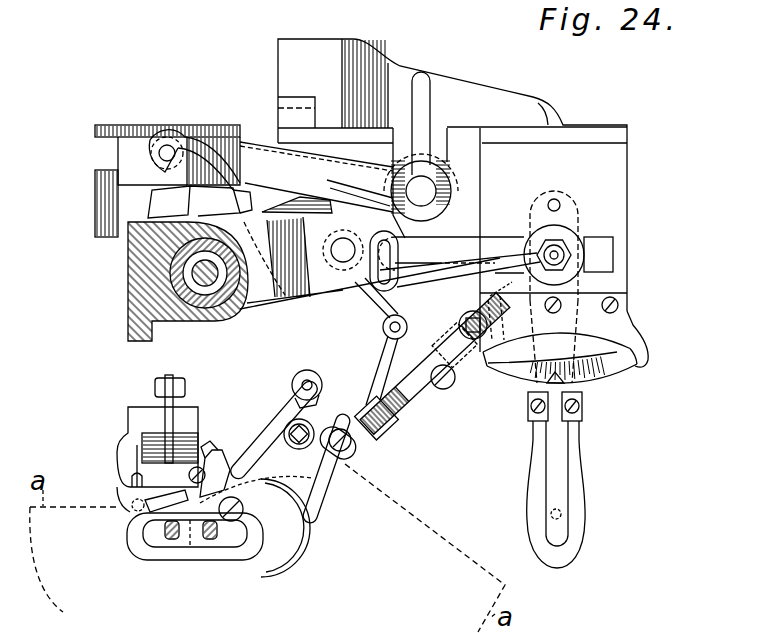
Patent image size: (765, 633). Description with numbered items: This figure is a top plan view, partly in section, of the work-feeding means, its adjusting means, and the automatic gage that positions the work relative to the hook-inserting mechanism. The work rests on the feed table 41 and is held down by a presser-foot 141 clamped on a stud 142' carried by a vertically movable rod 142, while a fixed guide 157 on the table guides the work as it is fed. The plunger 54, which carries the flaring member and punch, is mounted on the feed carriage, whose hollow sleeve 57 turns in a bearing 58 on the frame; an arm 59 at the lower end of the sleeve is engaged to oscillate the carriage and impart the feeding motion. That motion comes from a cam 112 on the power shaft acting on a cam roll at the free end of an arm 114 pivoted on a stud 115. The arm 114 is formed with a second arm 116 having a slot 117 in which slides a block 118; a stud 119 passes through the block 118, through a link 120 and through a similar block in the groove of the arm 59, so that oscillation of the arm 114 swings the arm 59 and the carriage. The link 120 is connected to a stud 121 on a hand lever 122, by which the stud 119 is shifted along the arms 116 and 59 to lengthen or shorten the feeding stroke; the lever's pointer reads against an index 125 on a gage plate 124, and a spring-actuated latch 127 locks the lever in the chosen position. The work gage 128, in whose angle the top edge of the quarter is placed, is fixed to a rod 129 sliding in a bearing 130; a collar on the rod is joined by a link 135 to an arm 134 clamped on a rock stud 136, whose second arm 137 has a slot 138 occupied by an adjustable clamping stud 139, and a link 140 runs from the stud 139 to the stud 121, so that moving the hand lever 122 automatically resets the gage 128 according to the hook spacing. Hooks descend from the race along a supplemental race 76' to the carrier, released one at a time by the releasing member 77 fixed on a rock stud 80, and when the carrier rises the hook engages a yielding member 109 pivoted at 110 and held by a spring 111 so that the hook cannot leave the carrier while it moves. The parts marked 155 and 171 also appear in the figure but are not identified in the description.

The feed table 41 is at (242, 532).
The plunger 54 is at (208, 545).
The hollow sleeve 57 is at (128, 282).
The bearing 58 is at (182, 321).
The arm 59 is at (266, 312).
The supplemental race 76' is at (142, 447).
The releasing member 77 is at (198, 415).
The rock stud 80 is at (160, 385).
The yielding member 109 is at (165, 528).
The pivot 110 is at (133, 503).
The spring 111 is at (132, 478).
The cam 112 is at (95, 188).
The arm 114 is at (257, 136).
The stud 115 is at (422, 191).
The second arm 116 is at (270, 174).
The slot 117 is at (459, 262).
The sliding block 118 is at (316, 159).
The stud 119 is at (370, 272).
The link 120 is at (489, 236).
The stud 121 is at (556, 255).
The hand lever 122 is at (580, 437).
The gage plate 124 is at (628, 329).
The index 125 is at (640, 350).
The spring actuated latch 127 is at (557, 483).
The work gage 128 is at (328, 470).
The rod 129 is at (417, 390).
The bearing 130 is at (392, 392).
The arm 134 is at (412, 332).
The link 135 is at (455, 368).
The rock stud 136 is at (387, 335).
The arm 137 is at (347, 290).
The slot 138 is at (360, 193).
The adjustable clamping stud 139 is at (370, 311).
The link 140 is at (445, 316).
The presser-foot 141 is at (262, 432).
The rod 142 is at (222, 461).
The stud 142' is at (286, 385).
The spring 155 is at (513, 320).
The fixed guide 157 is at (299, 441).
The shaft 171 is at (210, 284).